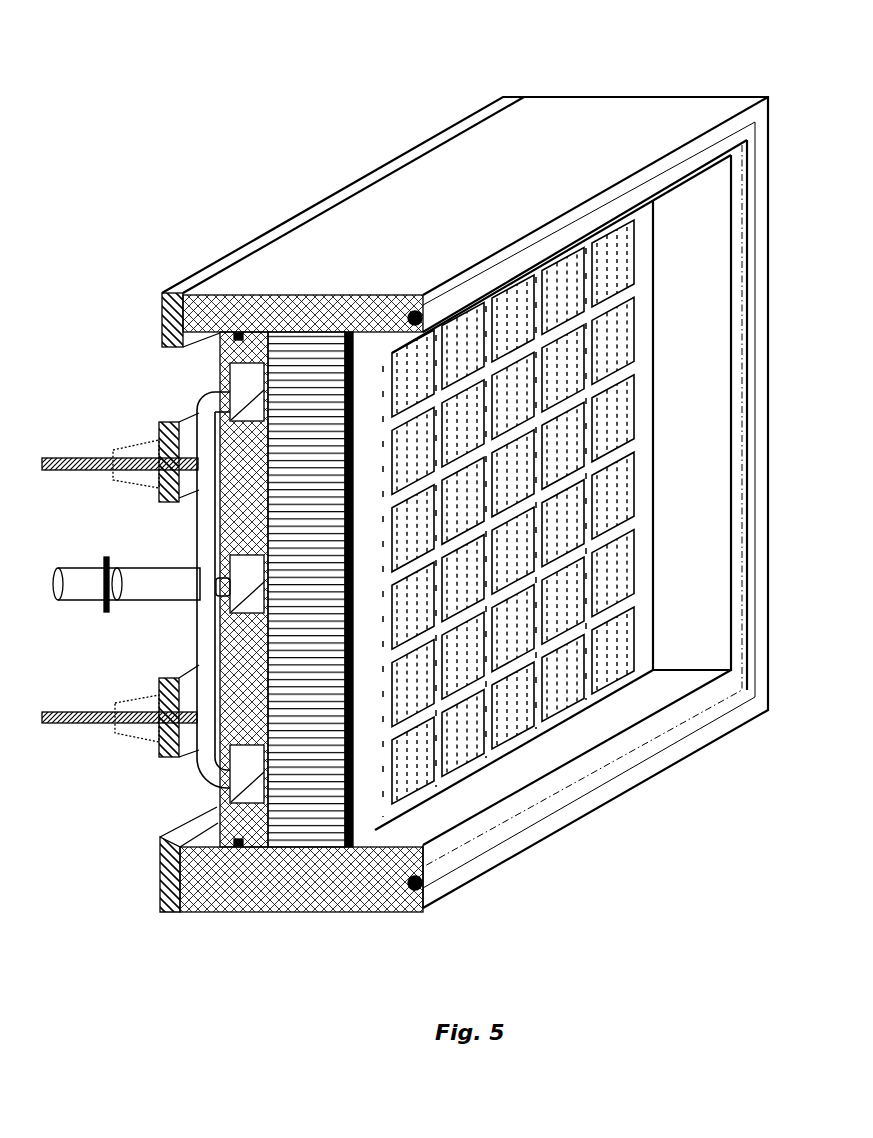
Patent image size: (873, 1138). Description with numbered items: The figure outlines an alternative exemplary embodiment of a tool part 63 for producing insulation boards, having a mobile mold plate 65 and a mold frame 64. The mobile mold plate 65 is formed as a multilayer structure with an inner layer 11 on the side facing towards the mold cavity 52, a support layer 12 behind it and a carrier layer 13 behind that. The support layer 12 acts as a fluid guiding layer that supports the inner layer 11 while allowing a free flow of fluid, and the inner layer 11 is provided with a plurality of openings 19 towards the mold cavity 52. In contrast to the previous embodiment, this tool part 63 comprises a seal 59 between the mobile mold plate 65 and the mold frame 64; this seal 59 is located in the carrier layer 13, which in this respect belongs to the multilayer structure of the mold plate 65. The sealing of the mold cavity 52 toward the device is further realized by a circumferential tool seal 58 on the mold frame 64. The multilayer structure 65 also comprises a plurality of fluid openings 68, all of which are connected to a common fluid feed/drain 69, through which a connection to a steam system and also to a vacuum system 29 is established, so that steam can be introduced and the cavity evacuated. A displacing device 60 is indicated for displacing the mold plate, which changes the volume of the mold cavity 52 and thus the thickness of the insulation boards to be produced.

The tool part 63 is at (95, 55).
The inner layer 11 is at (365, 380).
The seal 59 is at (238, 336).
The fluid openings 68 is at (242, 392).
The displacing device 60 is at (85, 428).
The vacuum system 29 is at (158, 490).
The fluid feed/drain 69 is at (158, 582).
The carrier layer 13 is at (217, 808).
The mold frame 64 is at (210, 878).
The mobile mold plate 65 is at (345, 958).
The support layer 12 is at (307, 815).
The tool seal 58 is at (505, 838).
The openings 19 is at (573, 678).
The mold cavity 52 is at (700, 603).